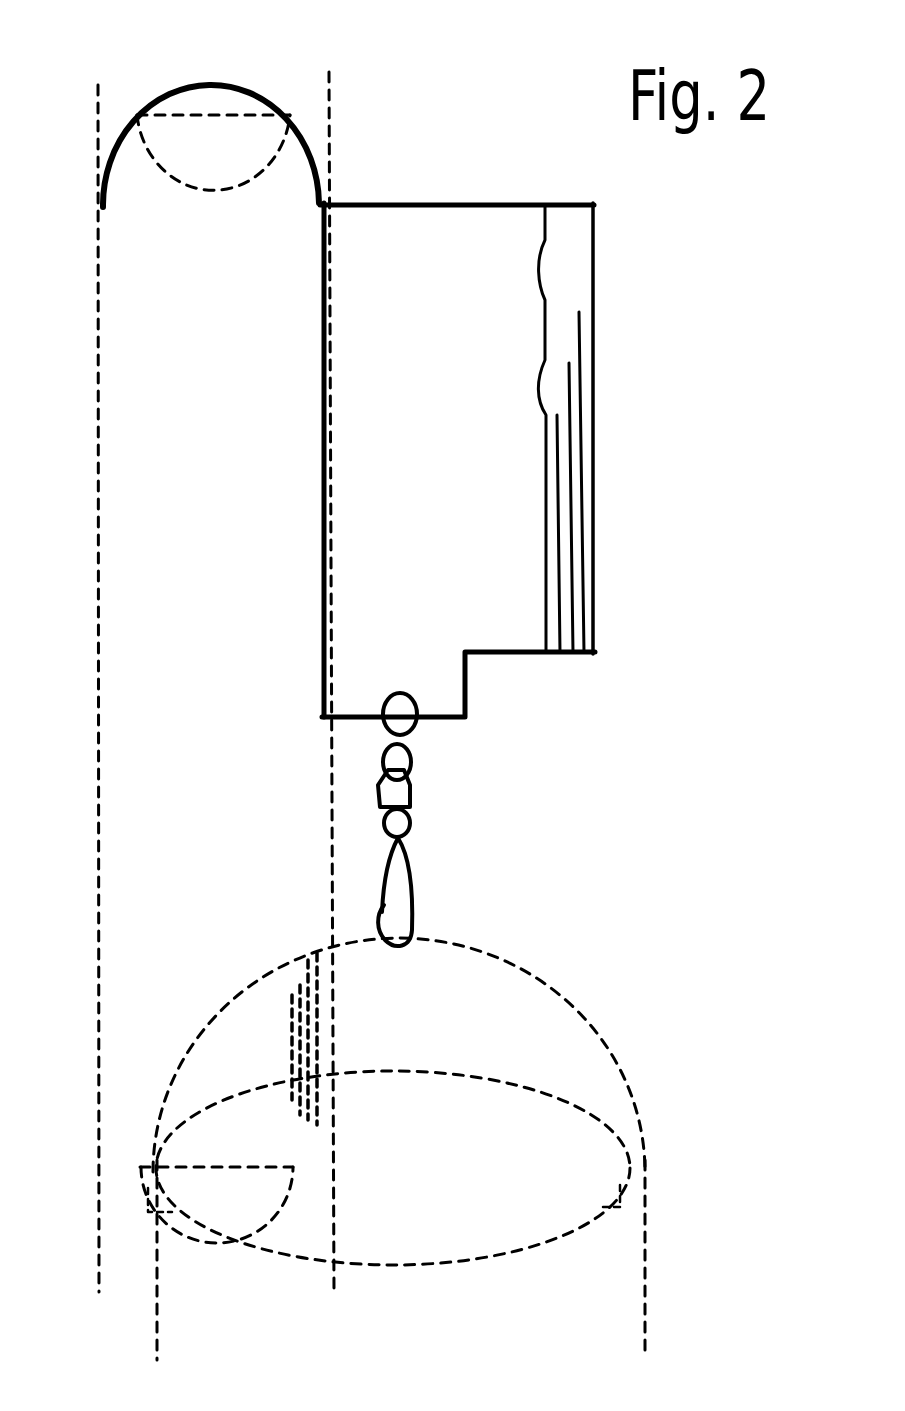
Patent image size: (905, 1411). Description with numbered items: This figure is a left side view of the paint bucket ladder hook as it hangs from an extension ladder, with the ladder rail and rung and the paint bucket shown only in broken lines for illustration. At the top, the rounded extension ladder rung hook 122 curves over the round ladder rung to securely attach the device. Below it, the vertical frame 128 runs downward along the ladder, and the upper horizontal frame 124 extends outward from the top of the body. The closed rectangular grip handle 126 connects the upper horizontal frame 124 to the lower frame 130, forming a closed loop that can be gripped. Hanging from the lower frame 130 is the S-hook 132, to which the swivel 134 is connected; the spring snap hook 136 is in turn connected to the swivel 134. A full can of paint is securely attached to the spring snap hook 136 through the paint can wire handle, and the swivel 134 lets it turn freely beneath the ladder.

The rounded extension ladder rung hook 122 is at (211, 80).
The upper horizontal frame 124 is at (440, 200).
The closed rectangular grip handle 126 is at (597, 312).
The vertical frame 128 is at (322, 432).
The lower frame 130 is at (470, 690).
The S-hook 132 is at (414, 761).
The swivel 134 is at (413, 798).
The spring snap hook 136 is at (410, 886).